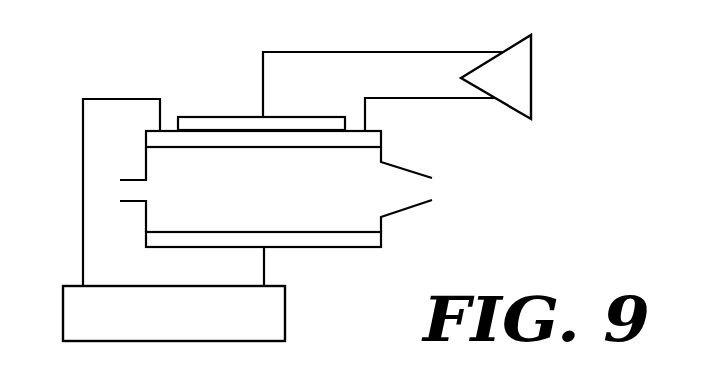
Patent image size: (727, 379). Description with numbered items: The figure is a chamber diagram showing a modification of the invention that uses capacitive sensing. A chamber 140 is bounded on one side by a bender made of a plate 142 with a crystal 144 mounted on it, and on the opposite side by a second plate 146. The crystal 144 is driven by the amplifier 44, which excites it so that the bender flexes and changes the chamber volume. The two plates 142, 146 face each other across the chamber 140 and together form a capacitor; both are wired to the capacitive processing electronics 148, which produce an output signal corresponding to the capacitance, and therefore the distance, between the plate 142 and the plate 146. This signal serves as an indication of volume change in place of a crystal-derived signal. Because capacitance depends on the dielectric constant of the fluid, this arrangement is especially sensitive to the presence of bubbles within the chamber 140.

The amplifier 44 is at (516, 88).
The chamber 140 is at (238, 202).
The plate 142 is at (380, 137).
The crystal 144 is at (221, 117).
The plate 146 is at (331, 248).
The capacitive processing electronics 148 is at (168, 286).